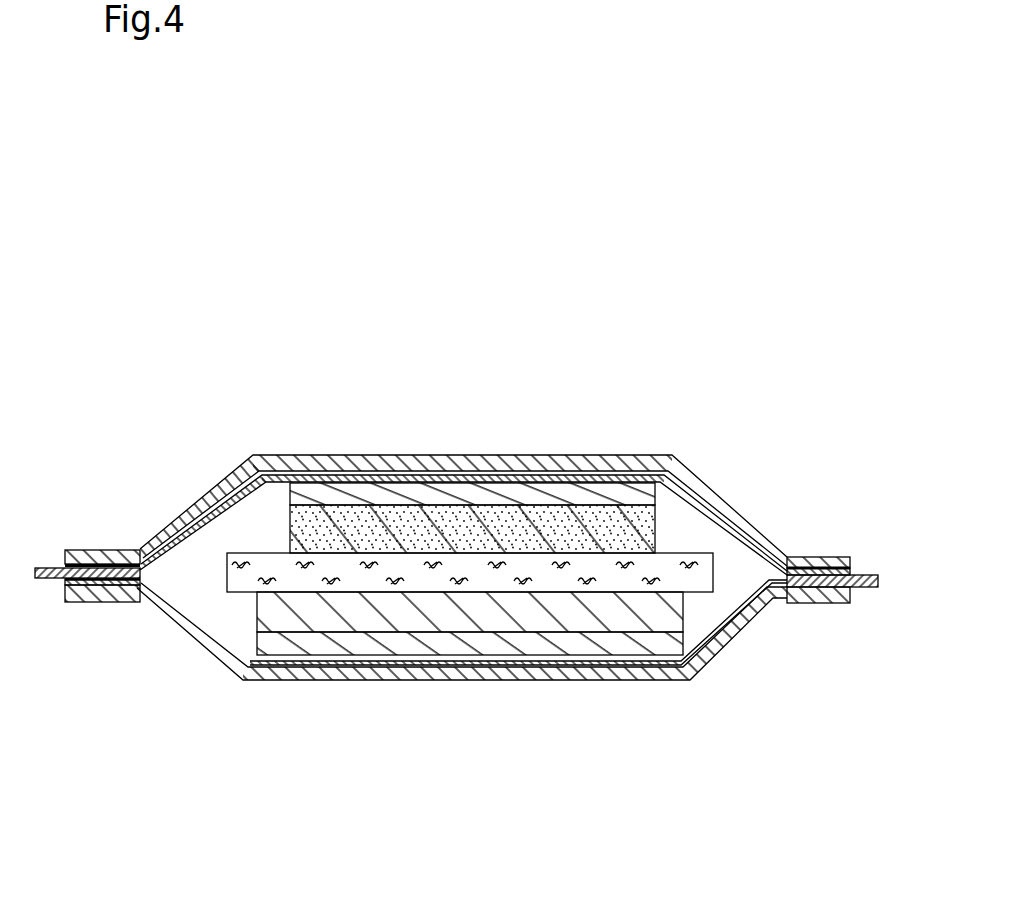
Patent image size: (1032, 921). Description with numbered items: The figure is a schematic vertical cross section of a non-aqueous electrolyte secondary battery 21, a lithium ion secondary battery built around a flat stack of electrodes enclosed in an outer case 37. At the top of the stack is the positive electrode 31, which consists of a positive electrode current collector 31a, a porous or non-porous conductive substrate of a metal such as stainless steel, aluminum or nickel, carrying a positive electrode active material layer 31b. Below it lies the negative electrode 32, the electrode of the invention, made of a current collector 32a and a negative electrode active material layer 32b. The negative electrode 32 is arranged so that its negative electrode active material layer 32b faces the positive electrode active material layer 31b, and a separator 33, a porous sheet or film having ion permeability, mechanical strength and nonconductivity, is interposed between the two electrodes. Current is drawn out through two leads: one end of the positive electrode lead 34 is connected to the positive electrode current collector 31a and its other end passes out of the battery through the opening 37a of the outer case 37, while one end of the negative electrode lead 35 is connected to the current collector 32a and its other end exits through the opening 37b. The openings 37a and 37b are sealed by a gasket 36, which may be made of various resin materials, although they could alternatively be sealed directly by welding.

The non-aqueous electrolyte secondary battery 21 is at (278, 240).
The positive electrode 31 is at (472, 414).
The positive electrode current collector 31a is at (410, 493).
The positive electrode active material layer 31b is at (488, 535).
The negative electrode 32 is at (470, 734).
The current collector 32a is at (418, 638).
The negative electrode active material layer 32b is at (503, 617).
The separator 33 is at (672, 548).
The positive electrode lead 34 is at (210, 490).
The negative electrode lead 35 is at (760, 606).
The gasket 36 is at (93, 550).
The outer case 37 is at (750, 530).
The opening 37a is at (67, 578).
The opening 37b is at (855, 587).